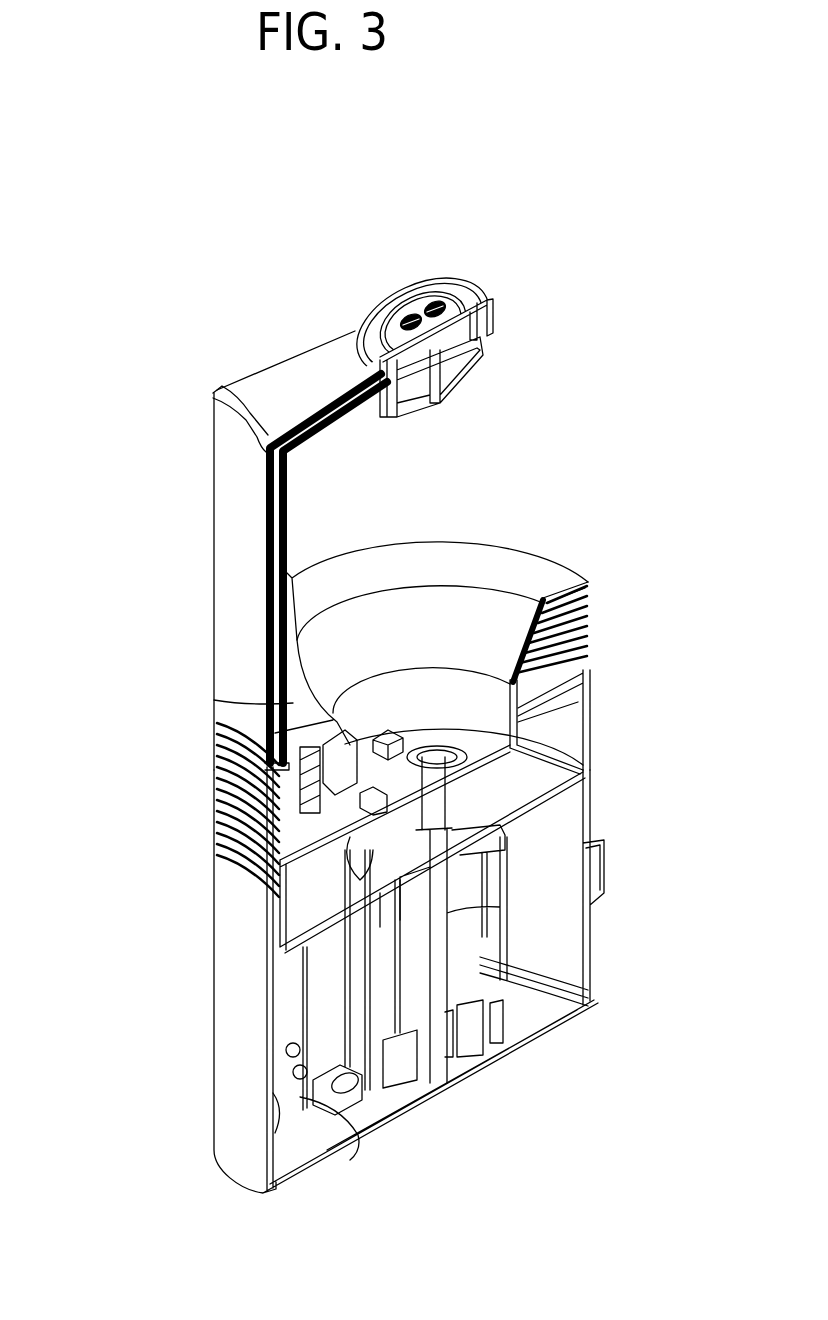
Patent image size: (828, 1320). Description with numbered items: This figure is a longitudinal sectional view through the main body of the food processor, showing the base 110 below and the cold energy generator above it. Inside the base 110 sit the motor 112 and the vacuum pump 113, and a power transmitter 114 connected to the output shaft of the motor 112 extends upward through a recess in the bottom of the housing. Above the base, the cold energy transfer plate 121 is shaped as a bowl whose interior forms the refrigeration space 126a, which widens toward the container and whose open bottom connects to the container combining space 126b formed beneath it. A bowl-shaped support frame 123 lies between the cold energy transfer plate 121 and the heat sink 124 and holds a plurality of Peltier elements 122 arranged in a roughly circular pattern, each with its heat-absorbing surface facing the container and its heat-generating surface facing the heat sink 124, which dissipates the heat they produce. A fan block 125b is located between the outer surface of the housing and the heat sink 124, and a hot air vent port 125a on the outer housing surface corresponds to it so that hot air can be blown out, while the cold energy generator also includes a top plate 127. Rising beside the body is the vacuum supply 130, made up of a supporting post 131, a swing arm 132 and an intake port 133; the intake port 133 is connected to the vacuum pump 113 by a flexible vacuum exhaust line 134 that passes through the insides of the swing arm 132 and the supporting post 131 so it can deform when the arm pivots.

The base 110 is at (234, 1037).
The motor 112 is at (447, 913).
The vacuum pump 113 is at (301, 969).
The power transmitter 114 is at (583, 778).
The cold energy transfer plate 121 is at (472, 616).
The Peltier element 122 is at (293, 703).
The support frame 123 is at (533, 681).
The heat sink 124 is at (583, 721).
The hot air vent port 125a is at (586, 623).
The fan block 125b is at (584, 651).
The refrigeration space 126a is at (356, 632).
The container combining space 126b is at (425, 690).
The top plate 127 is at (540, 566).
The vacuum supply 130 is at (164, 358).
The supporting post 131 is at (229, 569).
The swing arm 132 is at (297, 358).
The intake port 133 is at (428, 289).
The vacuum exhaust line 134 is at (272, 494).